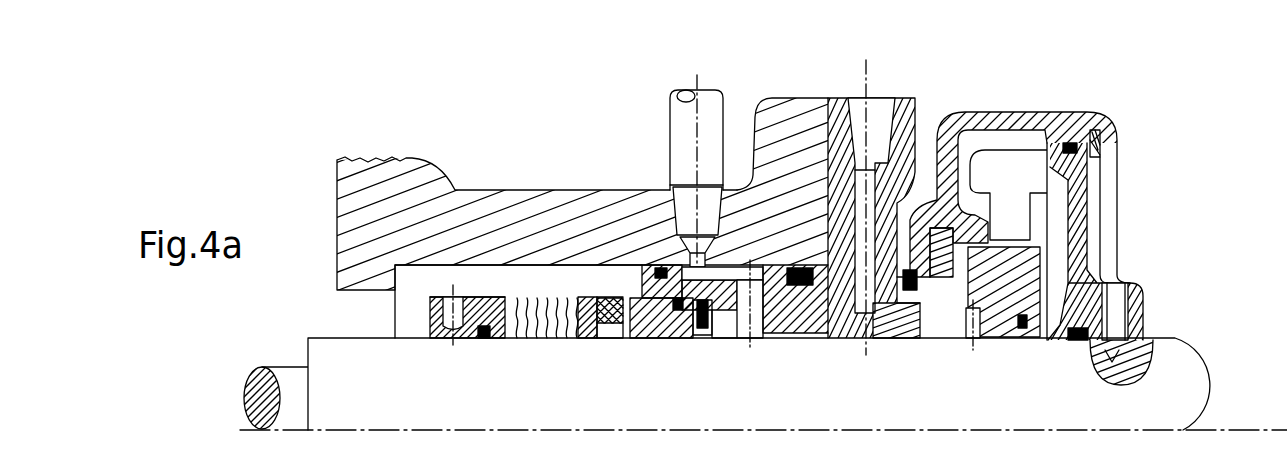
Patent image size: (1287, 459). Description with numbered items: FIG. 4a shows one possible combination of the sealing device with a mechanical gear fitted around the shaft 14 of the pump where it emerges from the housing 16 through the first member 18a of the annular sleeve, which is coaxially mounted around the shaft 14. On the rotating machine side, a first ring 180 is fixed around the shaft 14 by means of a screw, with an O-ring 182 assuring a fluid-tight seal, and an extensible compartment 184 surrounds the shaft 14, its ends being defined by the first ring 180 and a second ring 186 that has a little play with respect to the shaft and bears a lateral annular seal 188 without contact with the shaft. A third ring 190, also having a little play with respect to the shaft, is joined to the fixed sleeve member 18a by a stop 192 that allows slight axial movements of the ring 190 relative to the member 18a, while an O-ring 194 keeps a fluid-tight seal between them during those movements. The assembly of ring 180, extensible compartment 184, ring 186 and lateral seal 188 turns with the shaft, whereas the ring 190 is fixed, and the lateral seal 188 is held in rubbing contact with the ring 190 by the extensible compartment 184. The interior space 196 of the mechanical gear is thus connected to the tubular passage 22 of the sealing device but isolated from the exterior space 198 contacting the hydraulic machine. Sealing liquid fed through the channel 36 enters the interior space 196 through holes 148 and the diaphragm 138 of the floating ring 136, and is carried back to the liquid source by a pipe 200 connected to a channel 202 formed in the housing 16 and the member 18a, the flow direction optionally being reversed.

The shaft 14 is at (1178, 385).
The housing 16 is at (795, 130).
The first member 18a is at (793, 335).
The tubular passage 22 is at (945, 340).
The channel 36 is at (883, 120).
The floating ring 136 is at (902, 342).
The diaphragm 138 is at (897, 338).
The holes 148 is at (982, 342).
The first ring 180 is at (482, 336).
The O-ring 182 is at (486, 340).
The extensible compartment 184 is at (547, 340).
The second ring 186 is at (588, 342).
The lateral annular seal 188 is at (612, 298).
The third ring 190 is at (650, 340).
The stop 192 is at (717, 342).
The O-ring 194 is at (685, 340).
The interior space 196 is at (612, 342).
The exterior space 198 is at (445, 291).
The pipe 200 is at (712, 125).
The channel 202 is at (758, 340).